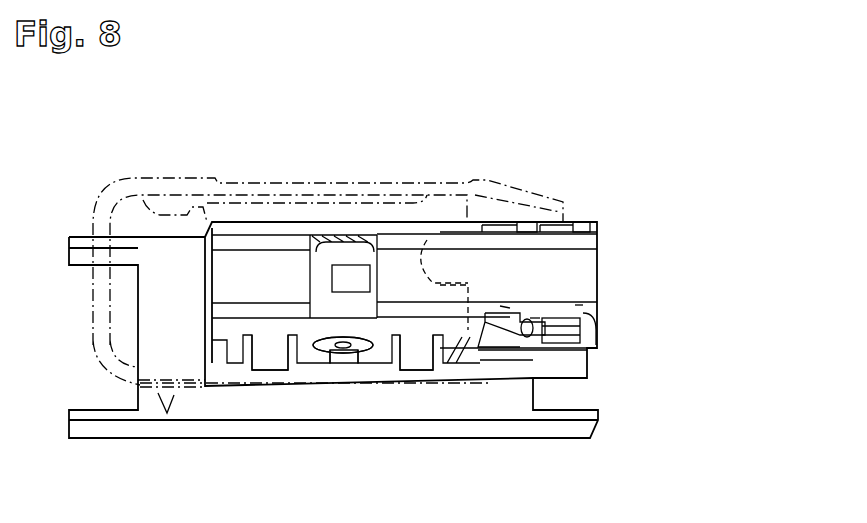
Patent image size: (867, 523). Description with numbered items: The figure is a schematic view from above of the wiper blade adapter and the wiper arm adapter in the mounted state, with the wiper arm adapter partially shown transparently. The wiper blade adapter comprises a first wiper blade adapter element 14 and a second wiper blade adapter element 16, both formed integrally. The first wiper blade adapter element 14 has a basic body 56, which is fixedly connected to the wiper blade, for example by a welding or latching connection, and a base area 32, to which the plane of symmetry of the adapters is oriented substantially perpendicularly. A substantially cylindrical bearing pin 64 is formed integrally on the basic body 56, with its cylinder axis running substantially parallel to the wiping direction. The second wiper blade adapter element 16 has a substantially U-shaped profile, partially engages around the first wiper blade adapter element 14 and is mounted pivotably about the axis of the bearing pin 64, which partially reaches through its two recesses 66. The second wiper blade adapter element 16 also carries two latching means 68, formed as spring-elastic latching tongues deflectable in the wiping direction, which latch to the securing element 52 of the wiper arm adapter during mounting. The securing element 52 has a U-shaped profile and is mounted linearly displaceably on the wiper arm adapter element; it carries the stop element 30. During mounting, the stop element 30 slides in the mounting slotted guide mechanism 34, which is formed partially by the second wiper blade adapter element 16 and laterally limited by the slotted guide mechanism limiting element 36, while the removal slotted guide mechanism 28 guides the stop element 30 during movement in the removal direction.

The first wiper blade adapter element 14 is at (613, 410).
The second wiper blade adapter element 16 is at (614, 213).
The removal slotted guide mechanism 28 is at (508, 306).
The stop element 30 is at (558, 334).
The base area 32 is at (140, 397).
The mounting slotted guide mechanism 34 is at (579, 304).
The slotted guide mechanism limiting element 36 is at (536, 317).
The securing element 52 is at (140, 225).
The basic body 56 is at (497, 405).
The bearing pin 64 is at (332, 353).
The recesses 66 is at (357, 355).
The latching means 68 is at (272, 360).